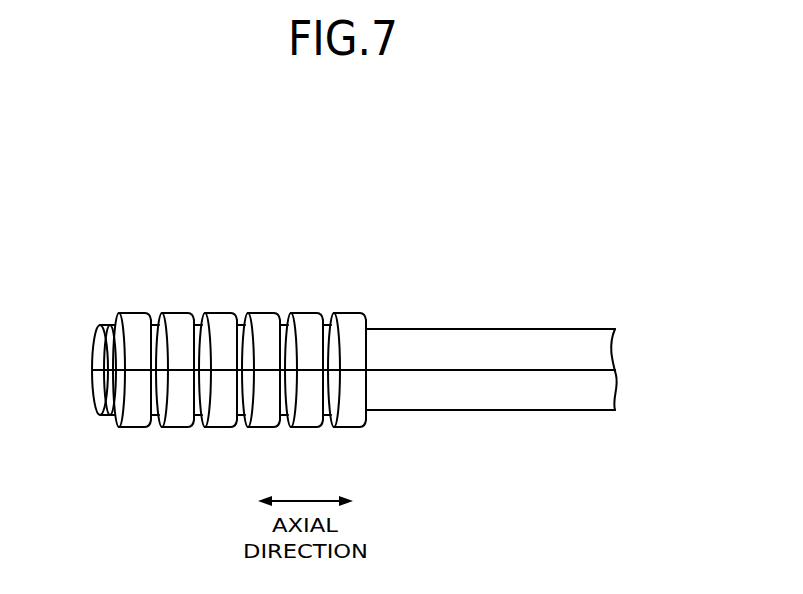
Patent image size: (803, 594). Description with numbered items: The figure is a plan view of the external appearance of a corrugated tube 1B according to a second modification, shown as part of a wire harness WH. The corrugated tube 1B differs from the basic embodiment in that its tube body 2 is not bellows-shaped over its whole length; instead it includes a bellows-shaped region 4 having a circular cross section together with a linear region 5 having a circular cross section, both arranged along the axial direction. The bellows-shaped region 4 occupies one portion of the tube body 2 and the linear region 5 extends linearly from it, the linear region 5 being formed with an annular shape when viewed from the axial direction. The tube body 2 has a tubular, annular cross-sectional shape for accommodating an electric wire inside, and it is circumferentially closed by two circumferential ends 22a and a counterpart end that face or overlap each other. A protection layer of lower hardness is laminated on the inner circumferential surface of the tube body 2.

The wire harness WH is at (387, 199).
The corrugated tube 1B is at (208, 226).
The tube body 2 is at (103, 322).
The bellows-shaped region 4 is at (240, 298).
The linear region 5 is at (477, 318).
The circumferential end 22a is at (475, 372).